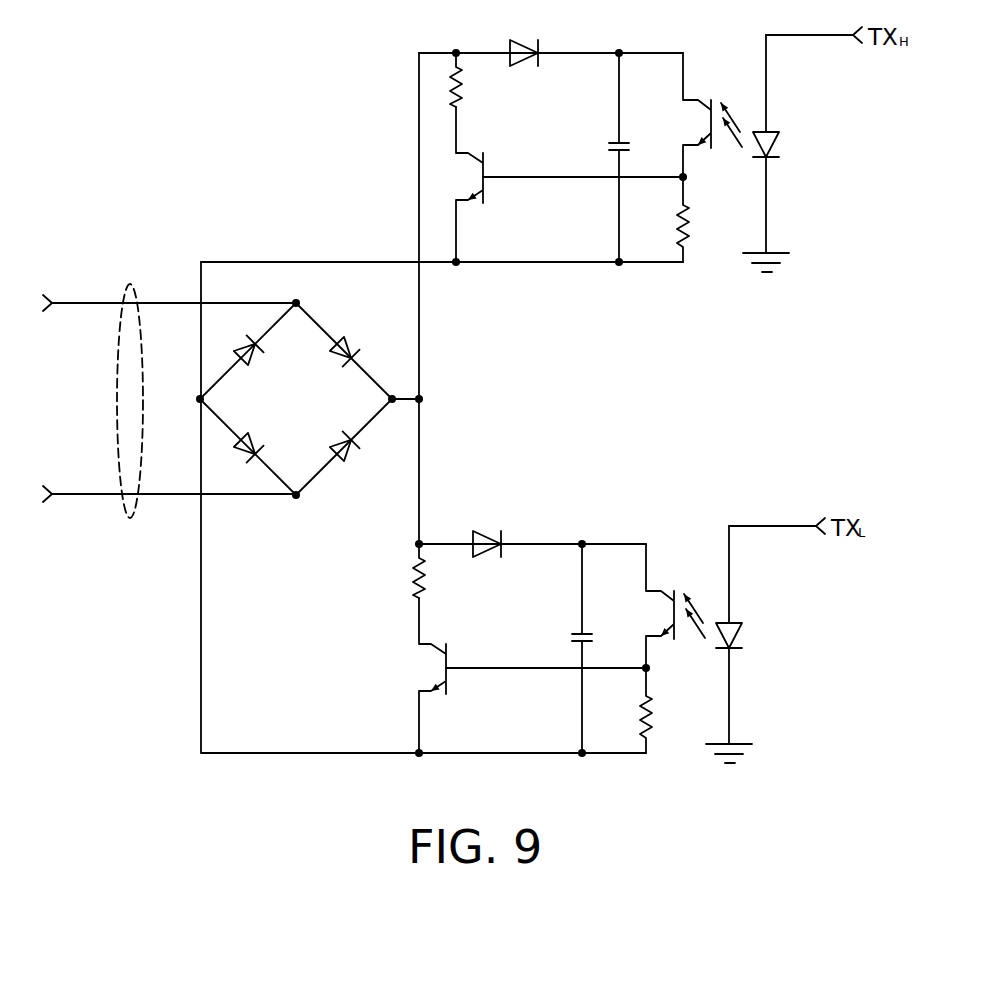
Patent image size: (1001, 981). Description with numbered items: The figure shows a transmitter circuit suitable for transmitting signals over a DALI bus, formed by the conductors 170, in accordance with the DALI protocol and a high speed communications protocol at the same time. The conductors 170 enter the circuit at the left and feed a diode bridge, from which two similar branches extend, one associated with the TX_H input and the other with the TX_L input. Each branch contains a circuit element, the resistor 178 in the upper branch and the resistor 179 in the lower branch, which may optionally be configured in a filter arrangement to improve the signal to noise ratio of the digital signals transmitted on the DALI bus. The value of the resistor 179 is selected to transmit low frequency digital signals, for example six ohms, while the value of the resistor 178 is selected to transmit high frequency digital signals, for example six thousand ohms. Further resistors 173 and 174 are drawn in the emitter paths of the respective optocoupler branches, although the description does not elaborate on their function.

The conductors 170 is at (130, 285).
The resistor (TX_H optocoupler emitter resistor) 173 is at (688, 235).
The resistor (TX_L optocoupler emitter resistor) 174 is at (651, 727).
The resistor 178 is at (462, 87).
The resistor 179 is at (415, 578).